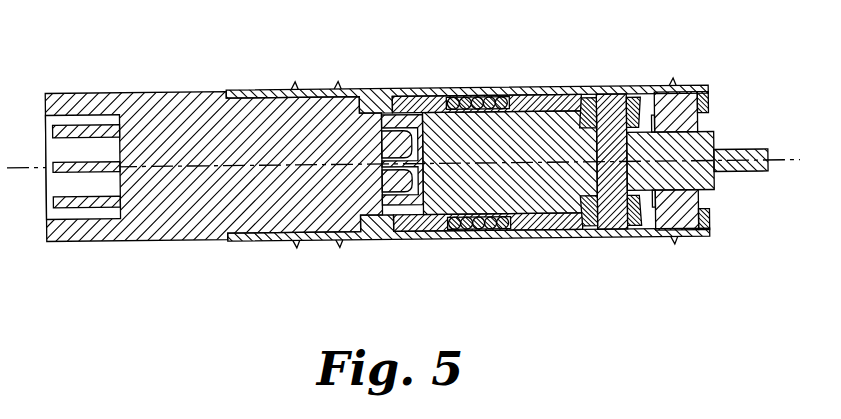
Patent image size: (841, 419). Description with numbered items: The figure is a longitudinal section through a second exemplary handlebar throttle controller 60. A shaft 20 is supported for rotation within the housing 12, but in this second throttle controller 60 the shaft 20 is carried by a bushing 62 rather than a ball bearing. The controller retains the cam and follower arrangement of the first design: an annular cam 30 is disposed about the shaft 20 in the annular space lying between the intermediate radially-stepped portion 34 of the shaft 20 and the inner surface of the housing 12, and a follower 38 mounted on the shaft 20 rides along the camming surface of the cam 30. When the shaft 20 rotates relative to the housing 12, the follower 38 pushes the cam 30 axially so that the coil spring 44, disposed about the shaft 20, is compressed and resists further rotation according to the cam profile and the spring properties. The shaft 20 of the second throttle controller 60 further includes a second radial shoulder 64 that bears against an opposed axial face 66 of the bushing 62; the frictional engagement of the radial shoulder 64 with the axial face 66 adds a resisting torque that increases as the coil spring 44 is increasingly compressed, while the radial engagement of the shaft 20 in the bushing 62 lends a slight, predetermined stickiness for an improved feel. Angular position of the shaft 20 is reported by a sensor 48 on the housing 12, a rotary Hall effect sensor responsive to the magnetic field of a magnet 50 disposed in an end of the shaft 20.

The sensor 48 is at (188, 91).
The housing 12 is at (405, 88).
The magnet 50 is at (397, 207).
The annular cam 30 is at (550, 90).
The coil spring 44 is at (470, 97).
The intermediate radially-stepped portion 34 is at (557, 217).
The follower 38 is at (637, 92).
The axial face 66 is at (656, 203).
The shaft 20 is at (737, 150).
The second radial shoulder 64 is at (660, 113).
The bushing 62 is at (683, 193).
The second throttle controller 60 is at (657, 290).